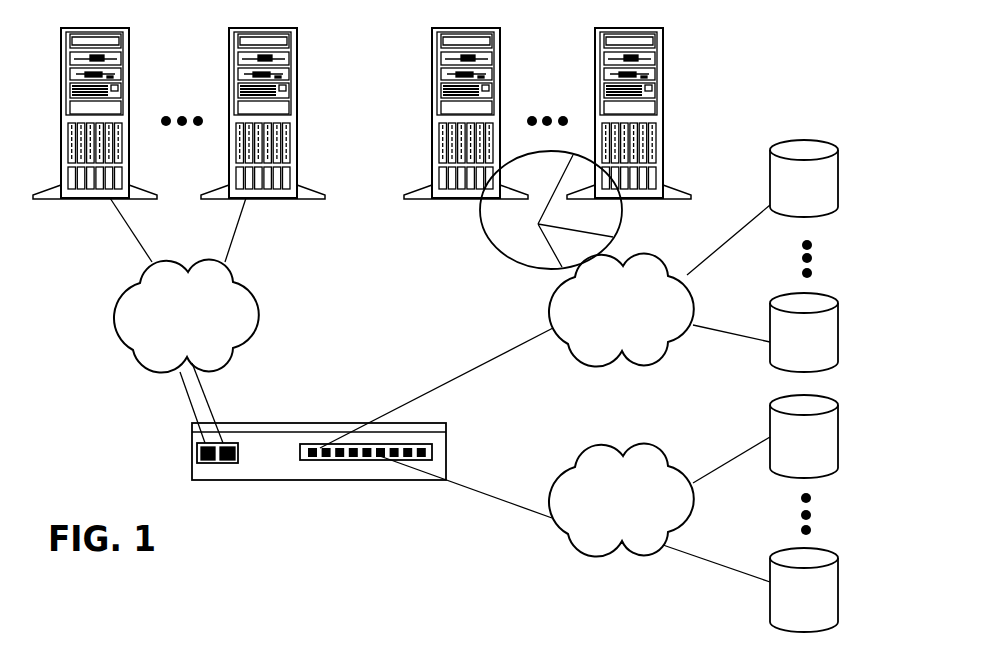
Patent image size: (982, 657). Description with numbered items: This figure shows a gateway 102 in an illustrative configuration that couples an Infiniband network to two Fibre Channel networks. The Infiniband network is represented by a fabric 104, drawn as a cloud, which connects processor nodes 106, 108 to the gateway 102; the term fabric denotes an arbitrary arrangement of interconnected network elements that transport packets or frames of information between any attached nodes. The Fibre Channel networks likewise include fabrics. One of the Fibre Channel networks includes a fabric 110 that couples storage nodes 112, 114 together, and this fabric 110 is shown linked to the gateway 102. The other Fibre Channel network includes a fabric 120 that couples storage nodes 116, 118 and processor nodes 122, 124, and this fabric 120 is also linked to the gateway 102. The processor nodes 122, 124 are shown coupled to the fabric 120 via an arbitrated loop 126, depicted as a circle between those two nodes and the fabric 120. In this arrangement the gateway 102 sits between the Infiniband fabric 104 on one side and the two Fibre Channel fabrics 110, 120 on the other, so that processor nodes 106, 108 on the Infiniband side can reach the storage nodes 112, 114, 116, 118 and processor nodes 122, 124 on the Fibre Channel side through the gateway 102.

The gateway 102 is at (238, 481).
The fabric 104 is at (162, 374).
The processor node 106 is at (80, 199).
The processor node 108 is at (238, 199).
The fabric 110 is at (597, 556).
The storage node 112 is at (792, 625).
The storage node 114 is at (790, 470).
The storage node 116 is at (780, 369).
The storage node 118 is at (797, 217).
The fabric 120 is at (597, 367).
The processor node 122 is at (442, 199).
The processor node 124 is at (645, 199).
The arbitrated loop 126 is at (538, 224).